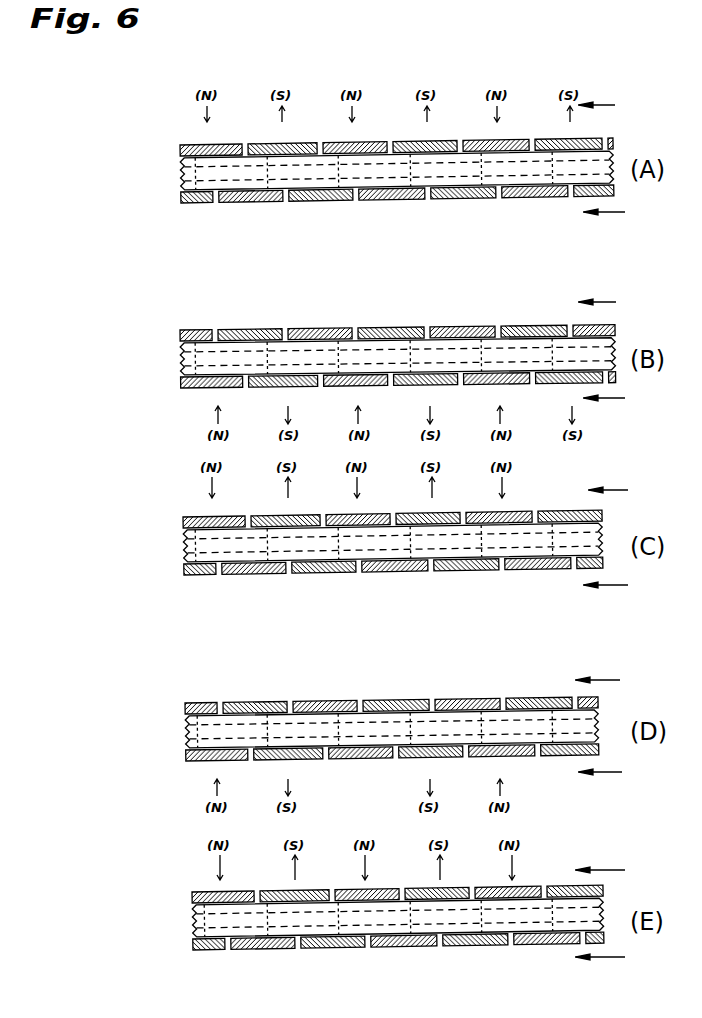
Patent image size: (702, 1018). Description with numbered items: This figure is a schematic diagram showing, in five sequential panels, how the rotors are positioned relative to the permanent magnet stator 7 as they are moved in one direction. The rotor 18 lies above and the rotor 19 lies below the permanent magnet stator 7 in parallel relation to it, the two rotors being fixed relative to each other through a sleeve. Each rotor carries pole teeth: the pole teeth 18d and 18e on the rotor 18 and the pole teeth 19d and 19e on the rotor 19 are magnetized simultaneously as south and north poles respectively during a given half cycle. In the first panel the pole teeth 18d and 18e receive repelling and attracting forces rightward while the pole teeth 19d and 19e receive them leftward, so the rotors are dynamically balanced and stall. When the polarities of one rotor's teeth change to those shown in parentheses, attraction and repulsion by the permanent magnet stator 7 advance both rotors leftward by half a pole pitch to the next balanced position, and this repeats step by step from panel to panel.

The permanent magnet stator 7 is at (180, 176).
The rotor 18 is at (181, 150).
The pole teeth 18d is at (372, 146).
The pole teeth 18e is at (300, 146).
The rotor 19 is at (180, 199).
The pole teeth 19d is at (408, 203).
The pole teeth 19e is at (333, 203).